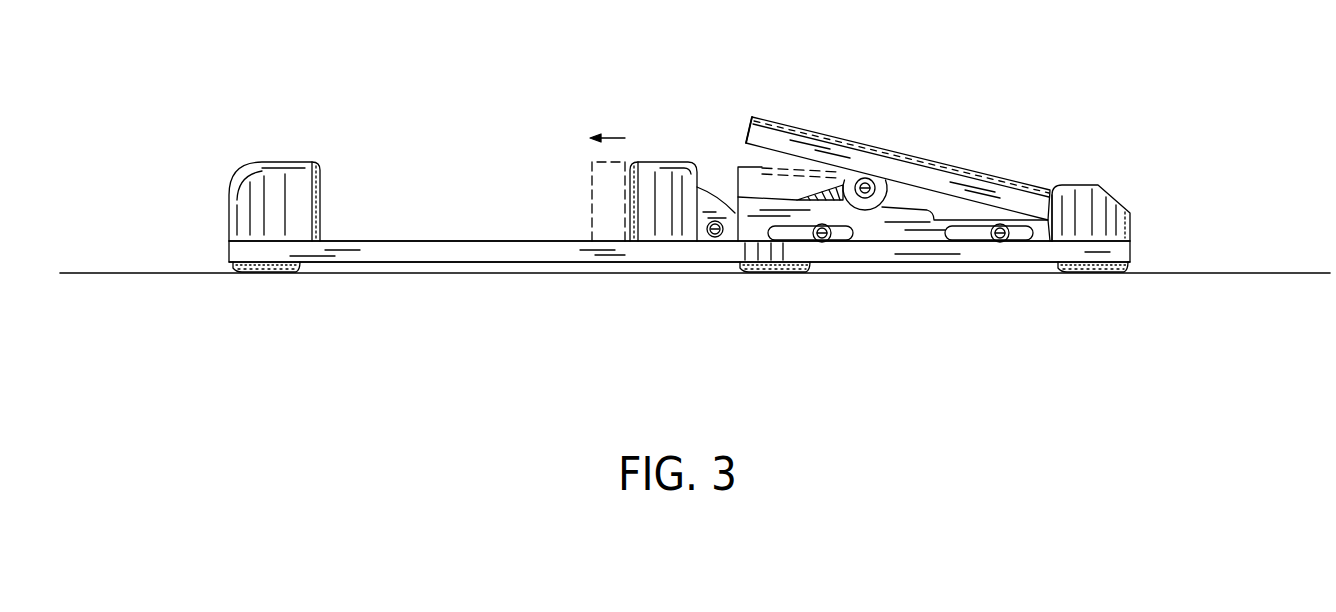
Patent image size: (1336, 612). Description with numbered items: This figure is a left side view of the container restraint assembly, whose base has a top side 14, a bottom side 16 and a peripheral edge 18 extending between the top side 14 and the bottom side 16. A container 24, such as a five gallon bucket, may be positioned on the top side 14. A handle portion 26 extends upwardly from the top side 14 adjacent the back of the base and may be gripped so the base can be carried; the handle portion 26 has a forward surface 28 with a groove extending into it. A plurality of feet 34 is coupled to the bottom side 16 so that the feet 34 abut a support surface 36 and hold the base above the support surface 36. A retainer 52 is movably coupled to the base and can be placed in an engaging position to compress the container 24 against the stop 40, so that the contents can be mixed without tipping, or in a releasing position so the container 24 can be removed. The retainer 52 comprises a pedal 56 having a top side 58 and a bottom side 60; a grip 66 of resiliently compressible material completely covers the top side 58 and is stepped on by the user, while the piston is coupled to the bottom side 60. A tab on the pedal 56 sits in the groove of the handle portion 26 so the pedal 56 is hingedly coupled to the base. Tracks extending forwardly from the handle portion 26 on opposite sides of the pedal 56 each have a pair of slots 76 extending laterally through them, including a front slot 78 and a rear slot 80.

The top side 14 is at (427, 241).
The bottom side 16 is at (468, 263).
The peripheral edge 18 is at (400, 253).
The container 24 is at (735, 195).
The handle portion 26 is at (1110, 200).
The forward surface 28 is at (1052, 208).
The feet 34 is at (278, 273).
The support surface 36 is at (152, 272).
The stop 40 is at (278, 161).
The retainer 52 is at (837, 112).
The pedal 56 is at (726, 147).
The top side 58 is at (947, 165).
The bottom side 60 is at (920, 190).
The grip 66 is at (900, 148).
The slots 76 is at (850, 255).
The front slot 78 is at (771, 255).
The rear slot 80 is at (1032, 255).